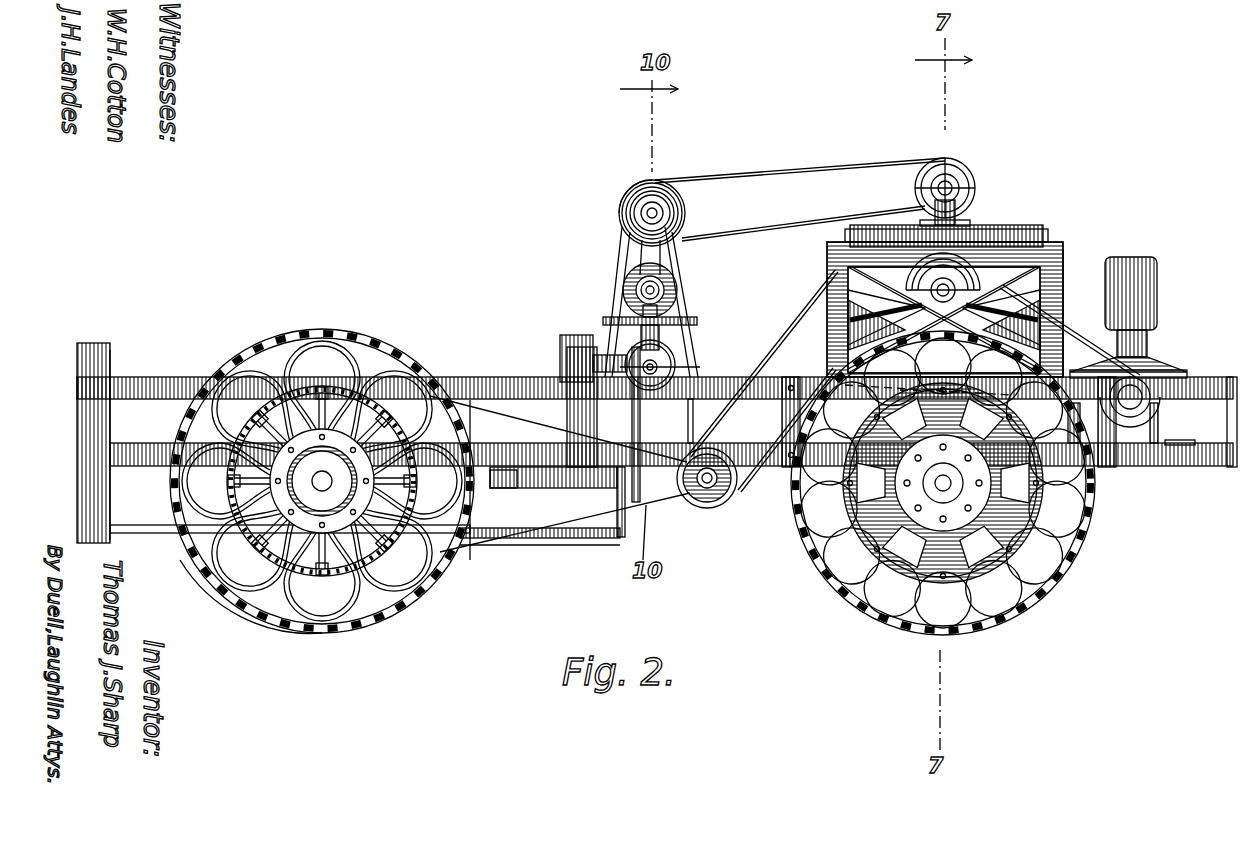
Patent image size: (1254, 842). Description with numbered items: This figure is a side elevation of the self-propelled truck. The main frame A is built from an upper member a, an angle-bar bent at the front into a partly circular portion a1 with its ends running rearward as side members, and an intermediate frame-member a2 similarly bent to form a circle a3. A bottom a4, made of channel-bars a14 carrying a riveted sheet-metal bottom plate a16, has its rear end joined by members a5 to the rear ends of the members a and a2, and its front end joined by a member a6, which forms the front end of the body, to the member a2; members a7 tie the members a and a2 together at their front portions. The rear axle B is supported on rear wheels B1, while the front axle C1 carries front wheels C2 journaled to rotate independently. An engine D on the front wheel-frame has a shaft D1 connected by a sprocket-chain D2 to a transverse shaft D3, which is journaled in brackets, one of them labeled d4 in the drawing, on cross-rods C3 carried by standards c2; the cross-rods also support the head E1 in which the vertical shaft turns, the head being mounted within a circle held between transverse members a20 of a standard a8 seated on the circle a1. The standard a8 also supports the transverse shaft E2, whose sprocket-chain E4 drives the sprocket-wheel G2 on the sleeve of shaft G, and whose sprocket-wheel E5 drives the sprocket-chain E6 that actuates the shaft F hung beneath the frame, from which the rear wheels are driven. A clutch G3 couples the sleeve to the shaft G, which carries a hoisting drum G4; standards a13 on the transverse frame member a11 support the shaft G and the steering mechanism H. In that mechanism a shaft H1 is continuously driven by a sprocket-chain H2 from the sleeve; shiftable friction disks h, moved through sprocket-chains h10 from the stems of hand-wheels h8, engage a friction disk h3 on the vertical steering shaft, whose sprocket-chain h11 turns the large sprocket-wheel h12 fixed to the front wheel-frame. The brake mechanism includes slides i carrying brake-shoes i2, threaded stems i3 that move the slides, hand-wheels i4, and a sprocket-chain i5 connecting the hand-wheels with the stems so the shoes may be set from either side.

The upper member a is at (500, 377).
The main frame A is at (93, 460).
The partly circular portion a1 is at (1220, 377).
The intermediate frame-member a2 is at (492, 410).
The partly circular portion a3 is at (1183, 468).
The bottom a4 is at (567, 540).
The connecting members a5 is at (110, 356).
The front body member a6 is at (610, 490).
The connecting members a7 is at (782, 400).
The standard a8 is at (1064, 262).
The transverse frame member a11 is at (672, 377).
The standards a13 is at (600, 300).
The channel-bars a14 is at (604, 547).
The sheet-metal bottom plate a16 is at (133, 530).
The transverse members a20 is at (850, 234).
The rear axle B is at (322, 481).
The rear wheels B1 is at (270, 628).
The front axle C1 is at (943, 483).
The front wheels C2 is at (1030, 605).
The cross-rods C3 is at (944, 325).
The standards c2 is at (1095, 467).
The engine D is at (1157, 300).
The engine shaft D1 is at (1160, 415).
The sprocket-chain D2 is at (1105, 345).
The transverse shaft D3 is at (958, 280).
The rod d4 is at (927, 393).
The head E1 is at (992, 240).
The transverse shaft E2 is at (957, 172).
The sprocket-chain E4 is at (800, 178).
The sprocket-wheel E5 is at (950, 225).
The sprocket-chain E6 is at (795, 322).
The transverse shaft F is at (707, 508).
The transverse shaft G is at (630, 214).
The sprocket-wheel G2 is at (680, 213).
The clutch G3 is at (657, 200).
The hoisting drum G4 is at (622, 192).
The steering mechanism H is at (616, 265).
The steering shaft H1 is at (632, 288).
The sprocket-chain H2 is at (672, 268).
The friction disks h is at (668, 292).
The friction disk h3 is at (700, 320).
The hand-wheels h8 is at (700, 333).
The sprocket-chains h10 is at (660, 345).
The sprocket-chain h11 is at (679, 421).
The large sprocket-wheel h12 is at (1156, 468).
The slides i is at (516, 489).
The brake-shoes i2 is at (468, 546).
The threaded stems i3 is at (622, 538).
The hand-wheels i4 is at (590, 340).
The sprocket-chain i5 is at (660, 470).